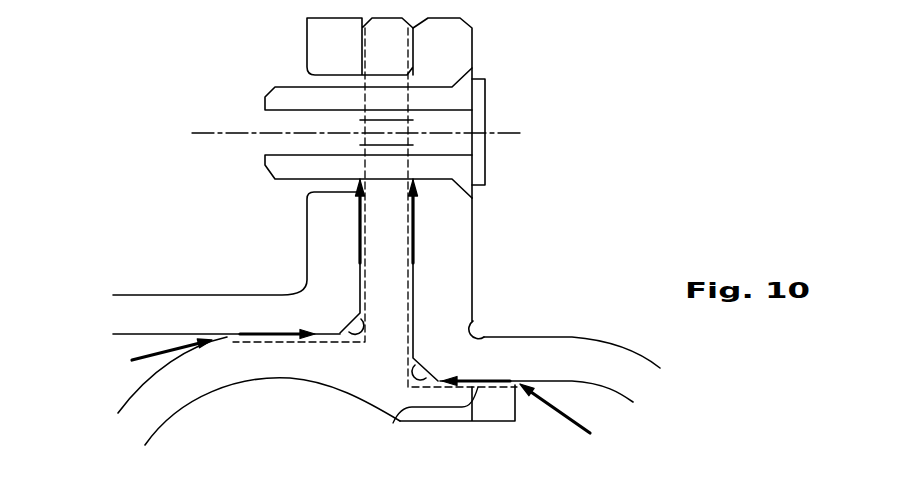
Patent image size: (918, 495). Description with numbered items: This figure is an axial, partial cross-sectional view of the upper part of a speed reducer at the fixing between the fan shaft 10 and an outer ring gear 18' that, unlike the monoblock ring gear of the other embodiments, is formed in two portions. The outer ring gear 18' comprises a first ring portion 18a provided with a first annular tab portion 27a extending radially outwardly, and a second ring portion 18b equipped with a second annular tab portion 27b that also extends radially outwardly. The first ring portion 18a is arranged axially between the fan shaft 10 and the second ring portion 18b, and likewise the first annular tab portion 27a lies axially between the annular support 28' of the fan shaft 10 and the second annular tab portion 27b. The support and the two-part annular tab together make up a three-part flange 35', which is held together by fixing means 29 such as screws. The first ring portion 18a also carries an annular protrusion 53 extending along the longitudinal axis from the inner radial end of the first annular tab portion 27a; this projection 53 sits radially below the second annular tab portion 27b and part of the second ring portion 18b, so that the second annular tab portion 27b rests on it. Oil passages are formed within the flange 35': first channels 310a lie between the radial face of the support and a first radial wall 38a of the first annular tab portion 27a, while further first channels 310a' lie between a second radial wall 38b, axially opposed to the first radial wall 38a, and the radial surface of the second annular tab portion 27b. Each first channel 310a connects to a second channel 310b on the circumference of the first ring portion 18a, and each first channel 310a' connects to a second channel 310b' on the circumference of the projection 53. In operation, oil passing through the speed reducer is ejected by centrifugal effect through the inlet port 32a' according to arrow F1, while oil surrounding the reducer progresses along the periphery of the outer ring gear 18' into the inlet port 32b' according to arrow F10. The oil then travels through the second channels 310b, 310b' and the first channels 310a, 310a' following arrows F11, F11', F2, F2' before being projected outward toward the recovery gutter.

The annular support 28' is at (375, 199).
The first radial wall 38a is at (340, 55).
The second radial wall 38b is at (428, 50).
The fixing means 29 is at (507, 103).
The flange 35' is at (373, 265).
The first annular tab portion 27a is at (385, 240).
The second annular tab portion 27b is at (447, 302).
The first channels 310a is at (274, 280).
The first channels 310a' is at (486, 280).
The fan shaft 10 is at (170, 312).
The inlet port 32b' is at (205, 302).
The inlet port 32a' is at (507, 343).
The first ring portion 18a is at (227, 367).
The second ring portion 18b is at (603, 363).
The outer ring gear 18' is at (575, 298).
The annular protrusion 53 is at (480, 405).
The second channel 310b is at (317, 392).
The second channel 310b' is at (532, 431).
The arrow F2 is at (300, 221).
The arrow F2' is at (471, 221).
The arrow F10 is at (148, 350).
The arrow F1 is at (580, 415).
The arrow F11 is at (261, 402).
The arrow F11' is at (419, 422).